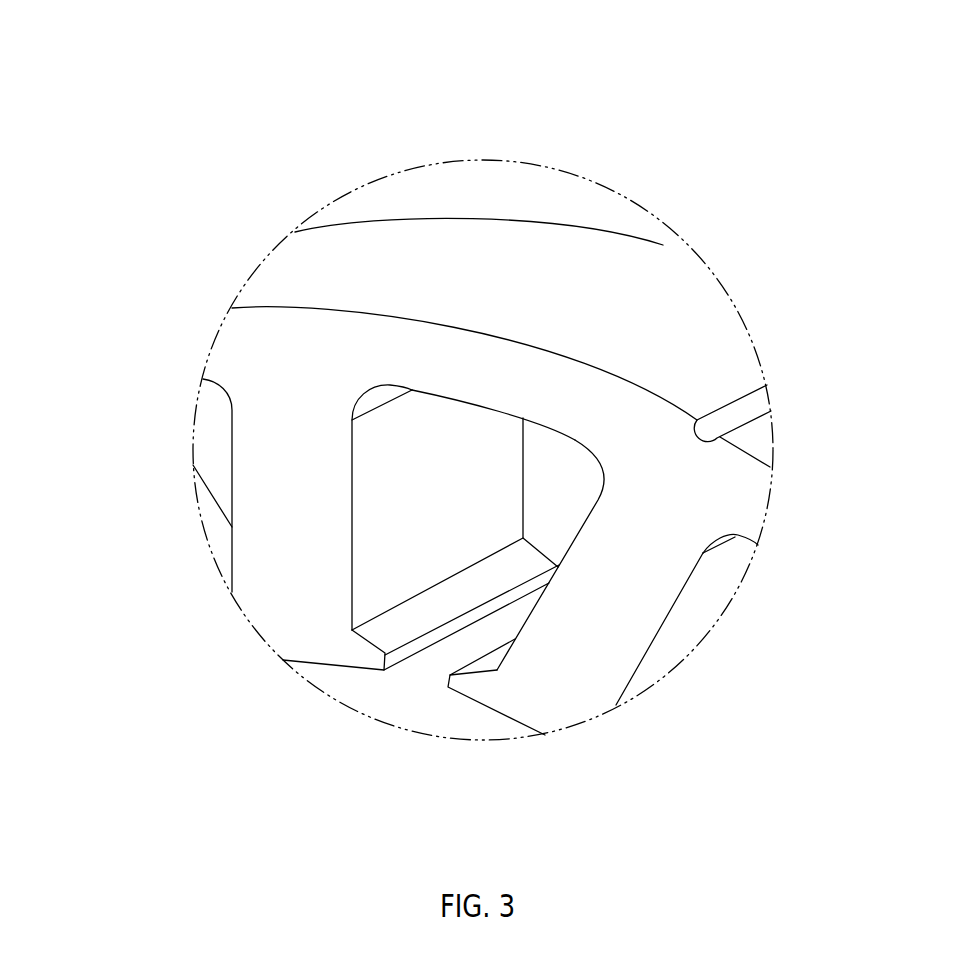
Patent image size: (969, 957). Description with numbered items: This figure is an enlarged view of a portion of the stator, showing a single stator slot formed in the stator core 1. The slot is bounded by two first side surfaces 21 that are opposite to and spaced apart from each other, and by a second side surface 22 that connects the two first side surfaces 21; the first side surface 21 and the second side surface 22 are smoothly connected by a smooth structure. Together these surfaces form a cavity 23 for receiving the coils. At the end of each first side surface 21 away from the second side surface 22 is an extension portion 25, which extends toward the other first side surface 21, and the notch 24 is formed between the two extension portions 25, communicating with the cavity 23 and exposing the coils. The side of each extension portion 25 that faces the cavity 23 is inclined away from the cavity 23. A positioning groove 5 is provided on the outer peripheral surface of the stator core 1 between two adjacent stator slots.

The stator core 1 is at (623, 310).
The positioning groove 5 is at (745, 410).
The first side surface 21 is at (370, 528).
The second side surface 22 is at (472, 402).
The cavity 23 is at (558, 505).
The notch 24 is at (438, 662).
The extension portion 25 is at (400, 625).